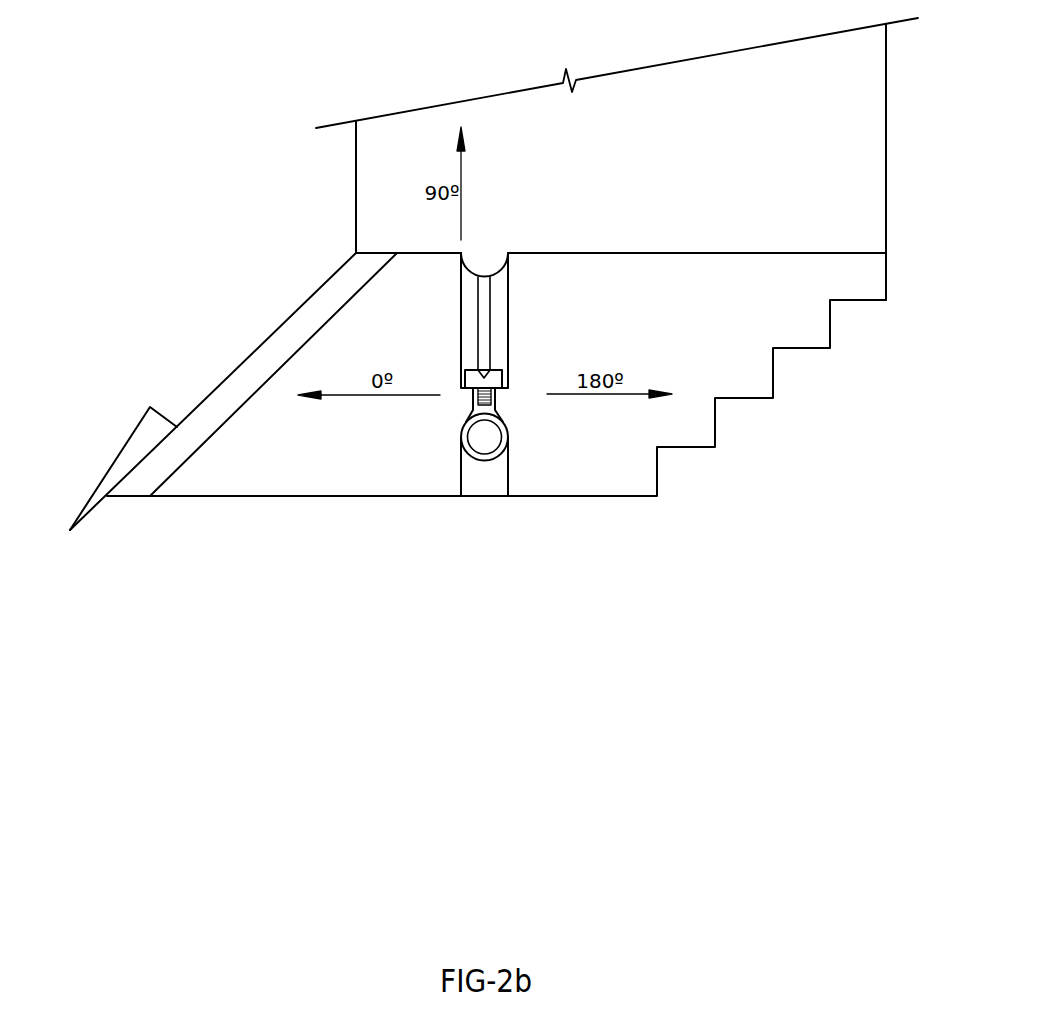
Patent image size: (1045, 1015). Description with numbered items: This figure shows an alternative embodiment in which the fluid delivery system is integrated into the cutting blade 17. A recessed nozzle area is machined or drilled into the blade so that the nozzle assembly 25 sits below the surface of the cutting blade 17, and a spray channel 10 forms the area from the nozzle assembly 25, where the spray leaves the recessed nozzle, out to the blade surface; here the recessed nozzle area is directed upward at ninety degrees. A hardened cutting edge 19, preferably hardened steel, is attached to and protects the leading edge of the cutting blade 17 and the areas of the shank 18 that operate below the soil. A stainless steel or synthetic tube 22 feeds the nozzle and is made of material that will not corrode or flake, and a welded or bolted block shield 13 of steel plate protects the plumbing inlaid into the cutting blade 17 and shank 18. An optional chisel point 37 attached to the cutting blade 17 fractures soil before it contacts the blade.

The spray channel 10 is at (487, 277).
The block shield 13 is at (489, 477).
The cutting blade 17 is at (358, 290).
The shank 18 is at (370, 169).
The hardened cutting edge 19 is at (262, 357).
The stainless steel or synthetic tube 22 is at (478, 438).
The nozzle assembly 25 is at (497, 376).
The chisel point 37 is at (142, 438).